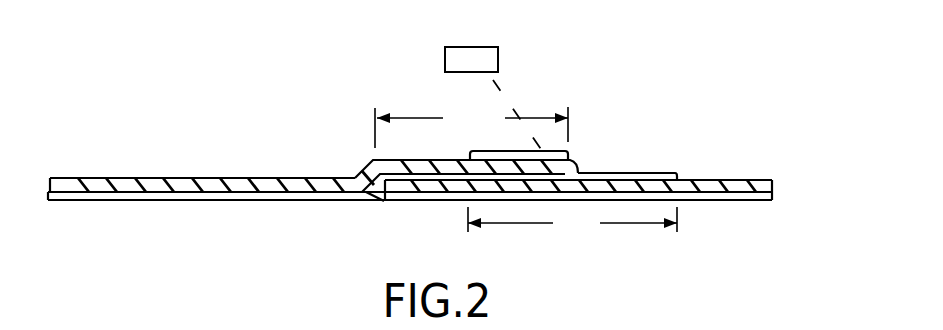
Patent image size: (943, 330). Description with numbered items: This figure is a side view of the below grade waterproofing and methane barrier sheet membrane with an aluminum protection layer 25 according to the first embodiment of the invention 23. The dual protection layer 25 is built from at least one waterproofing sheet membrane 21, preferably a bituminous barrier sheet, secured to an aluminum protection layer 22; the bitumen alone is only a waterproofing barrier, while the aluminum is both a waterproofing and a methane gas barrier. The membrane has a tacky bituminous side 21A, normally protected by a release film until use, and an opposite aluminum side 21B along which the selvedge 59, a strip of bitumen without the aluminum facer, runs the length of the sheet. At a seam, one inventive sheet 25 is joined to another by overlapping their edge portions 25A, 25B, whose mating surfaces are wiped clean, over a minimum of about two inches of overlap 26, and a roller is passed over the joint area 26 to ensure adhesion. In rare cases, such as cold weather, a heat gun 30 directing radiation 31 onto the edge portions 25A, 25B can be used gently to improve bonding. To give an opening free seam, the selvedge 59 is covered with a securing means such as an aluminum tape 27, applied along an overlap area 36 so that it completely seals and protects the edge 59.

The waterproofing sheet membrane 21 is at (416, 194).
The bituminous side 21A is at (232, 200).
The aluminum side 21B is at (270, 180).
The aluminum protection layer 22 is at (108, 186).
The first embodiment of the invention 23 is at (683, 73).
The dual protection layer 25 is at (419, 190).
The edge portion 25A is at (443, 197).
The edge portion 25B is at (430, 161).
The overlap 26 is at (471, 127).
The aluminum tape 27 is at (638, 172).
The heat gun 30 is at (498, 59).
The radiation 31 is at (507, 109).
The overlap area 36 is at (572, 224).
The selvedge 59 is at (574, 166).